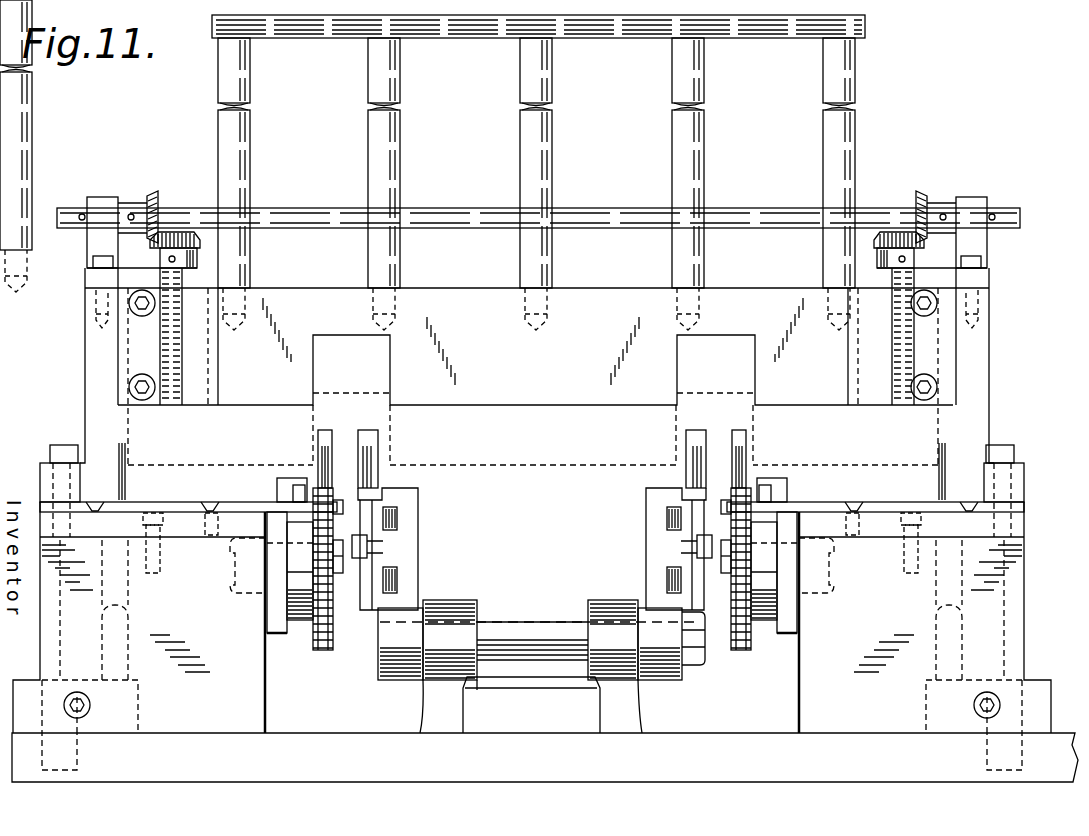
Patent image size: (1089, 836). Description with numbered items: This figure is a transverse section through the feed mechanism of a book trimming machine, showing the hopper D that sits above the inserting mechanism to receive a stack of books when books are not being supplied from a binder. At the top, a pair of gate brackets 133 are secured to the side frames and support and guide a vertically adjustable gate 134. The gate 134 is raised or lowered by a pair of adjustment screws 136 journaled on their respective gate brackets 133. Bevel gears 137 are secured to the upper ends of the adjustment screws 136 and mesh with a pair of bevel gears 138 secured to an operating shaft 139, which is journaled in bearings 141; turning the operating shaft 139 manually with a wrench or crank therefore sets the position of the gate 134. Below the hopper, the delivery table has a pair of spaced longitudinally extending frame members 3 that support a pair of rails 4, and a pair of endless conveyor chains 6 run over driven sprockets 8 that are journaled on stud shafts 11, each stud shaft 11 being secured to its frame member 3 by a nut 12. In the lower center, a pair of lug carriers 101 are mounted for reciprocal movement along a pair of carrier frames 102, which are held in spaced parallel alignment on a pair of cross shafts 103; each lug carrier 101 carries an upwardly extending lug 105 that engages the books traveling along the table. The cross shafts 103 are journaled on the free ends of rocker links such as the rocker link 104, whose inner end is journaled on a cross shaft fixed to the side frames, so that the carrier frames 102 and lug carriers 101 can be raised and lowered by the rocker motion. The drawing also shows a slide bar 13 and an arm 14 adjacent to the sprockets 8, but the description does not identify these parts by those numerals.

The hopper D is at (870, 95).
The operating shaft 139 is at (598, 217).
The bearings 141 is at (97, 197).
The bevel gears 138 is at (148, 197).
The bevel gears 137 is at (172, 238).
The adjustment screws 136 is at (180, 381).
The gate brackets 133 is at (93, 360).
The gate 134 is at (637, 265).
The slide bar 13 is at (200, 497).
The rails 4 is at (277, 490).
The nuts 12 is at (240, 593).
The frame members 3 is at (268, 630).
The stud shafts 11 is at (300, 588).
The driven sprockets 8 is at (317, 632).
The endless conveyor chains 6 is at (325, 647).
The lever arm 14 is at (320, 434).
The lug 105 is at (375, 453).
The carrier frames 102 is at (410, 507).
The lug carriers 101 is at (395, 578).
The cross shafts 103 is at (547, 600).
The rocker link 104 is at (620, 714).